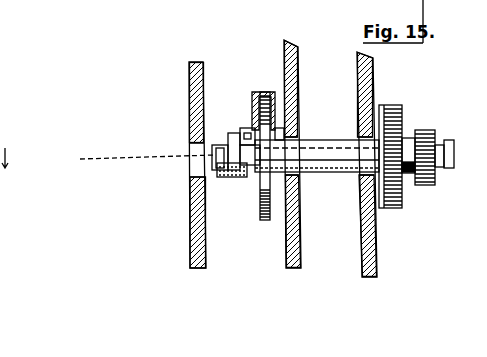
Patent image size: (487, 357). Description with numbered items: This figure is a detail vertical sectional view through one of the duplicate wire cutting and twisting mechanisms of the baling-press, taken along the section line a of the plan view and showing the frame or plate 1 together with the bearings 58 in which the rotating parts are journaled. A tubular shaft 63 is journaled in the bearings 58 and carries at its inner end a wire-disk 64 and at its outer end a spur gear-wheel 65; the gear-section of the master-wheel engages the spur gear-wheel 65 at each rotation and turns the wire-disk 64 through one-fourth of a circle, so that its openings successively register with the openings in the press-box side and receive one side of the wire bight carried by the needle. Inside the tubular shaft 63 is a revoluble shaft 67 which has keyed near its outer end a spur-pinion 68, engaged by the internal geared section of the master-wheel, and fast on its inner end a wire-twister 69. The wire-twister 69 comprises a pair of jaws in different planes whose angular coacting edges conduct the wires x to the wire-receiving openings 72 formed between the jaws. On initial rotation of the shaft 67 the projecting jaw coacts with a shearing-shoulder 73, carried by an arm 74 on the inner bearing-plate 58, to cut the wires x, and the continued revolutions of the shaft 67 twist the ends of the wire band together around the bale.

The frame plate 1 is at (183, 98).
The bearings 58 is at (283, 58).
The tubular shaft 63 is at (326, 143).
The wire-disk 64 is at (262, 222).
The spur gear-wheel 65 is at (389, 106).
The revoluble shaft 67 is at (215, 172).
The spur-pinion 68 is at (433, 129).
The wire-twister 69 is at (233, 133).
The wire-receiving openings 72 is at (248, 177).
The shearing-shoulder 73 is at (243, 127).
The arm 74 is at (263, 92).
The wires x is at (139, 160).
The section line a a is at (17, 150).